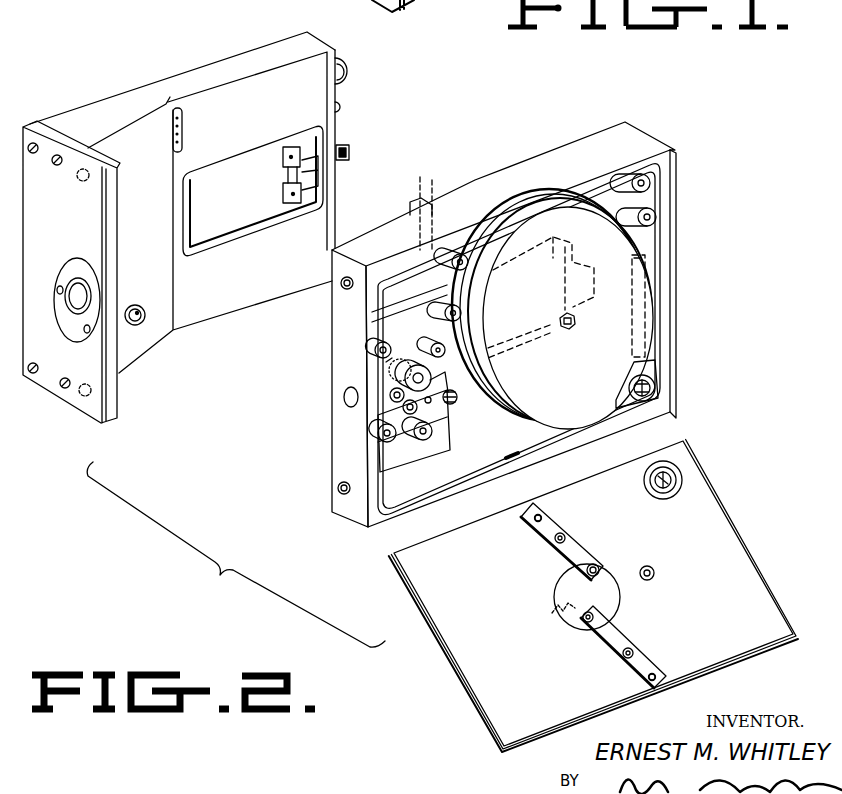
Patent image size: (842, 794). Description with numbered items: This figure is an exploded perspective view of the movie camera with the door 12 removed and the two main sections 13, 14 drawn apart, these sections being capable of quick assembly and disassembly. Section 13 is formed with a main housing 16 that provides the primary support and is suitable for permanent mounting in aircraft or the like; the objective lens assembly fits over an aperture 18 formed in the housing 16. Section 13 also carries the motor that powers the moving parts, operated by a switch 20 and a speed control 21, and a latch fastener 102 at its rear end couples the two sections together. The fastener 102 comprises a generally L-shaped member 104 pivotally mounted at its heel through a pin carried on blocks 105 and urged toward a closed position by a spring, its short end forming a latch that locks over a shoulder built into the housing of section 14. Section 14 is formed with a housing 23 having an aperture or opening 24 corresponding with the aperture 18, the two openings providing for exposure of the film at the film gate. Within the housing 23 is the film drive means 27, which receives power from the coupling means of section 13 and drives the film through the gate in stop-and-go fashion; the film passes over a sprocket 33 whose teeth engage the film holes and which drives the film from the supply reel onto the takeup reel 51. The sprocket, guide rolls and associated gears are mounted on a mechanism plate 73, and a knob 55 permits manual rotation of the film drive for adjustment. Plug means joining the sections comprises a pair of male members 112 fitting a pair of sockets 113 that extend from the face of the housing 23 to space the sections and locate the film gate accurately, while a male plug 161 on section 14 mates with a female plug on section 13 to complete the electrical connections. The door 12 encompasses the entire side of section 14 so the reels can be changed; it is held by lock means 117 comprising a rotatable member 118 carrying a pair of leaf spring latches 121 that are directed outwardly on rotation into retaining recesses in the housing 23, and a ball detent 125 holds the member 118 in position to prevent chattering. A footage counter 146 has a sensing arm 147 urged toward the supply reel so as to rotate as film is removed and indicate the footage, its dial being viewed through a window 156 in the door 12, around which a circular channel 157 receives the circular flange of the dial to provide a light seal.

The door 12 is at (736, 540).
The main section 13 is at (141, 70).
The main section 14 is at (750, 356).
The main housing 16 is at (276, 47).
The aperture 18 is at (78, 283).
The switch 20 is at (340, 108).
The speed control 21 is at (347, 68).
The housing 23 is at (537, 156).
The aperture or opening 24 is at (344, 399).
The film drive means 27 is at (409, 295).
The sprocket 33 is at (411, 366).
The takeup reel 51 is at (574, 380).
The knob 55 is at (418, 443).
The mechanism plate 73 is at (434, 323).
The latch fastener 102 is at (364, 144).
The L-shaped member 104 is at (310, 187).
The blocks 105 is at (282, 164).
The male members 112 is at (85, 396).
The sockets 113 is at (338, 490).
The lock means 117 is at (567, 537).
The rotating member 118 is at (568, 579).
The leaf spring latches 121 is at (617, 643).
The ball detent 125 is at (553, 614).
The footage counter 146 is at (646, 346).
The sensing arm 147 is at (650, 286).
The window 156 is at (680, 475).
The circular channel 157 is at (656, 388).
The male plug 161 is at (428, 178).